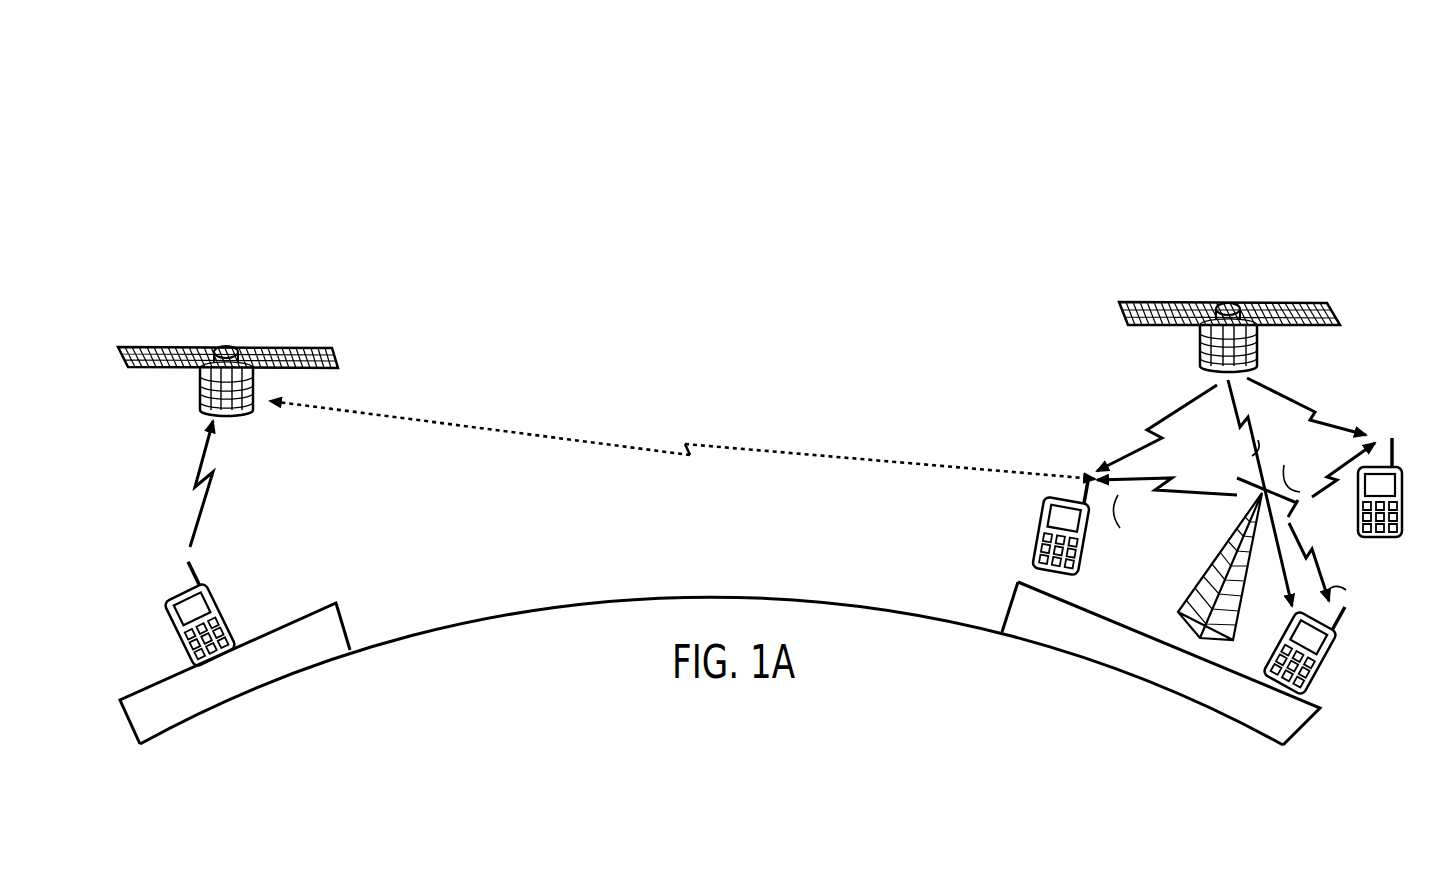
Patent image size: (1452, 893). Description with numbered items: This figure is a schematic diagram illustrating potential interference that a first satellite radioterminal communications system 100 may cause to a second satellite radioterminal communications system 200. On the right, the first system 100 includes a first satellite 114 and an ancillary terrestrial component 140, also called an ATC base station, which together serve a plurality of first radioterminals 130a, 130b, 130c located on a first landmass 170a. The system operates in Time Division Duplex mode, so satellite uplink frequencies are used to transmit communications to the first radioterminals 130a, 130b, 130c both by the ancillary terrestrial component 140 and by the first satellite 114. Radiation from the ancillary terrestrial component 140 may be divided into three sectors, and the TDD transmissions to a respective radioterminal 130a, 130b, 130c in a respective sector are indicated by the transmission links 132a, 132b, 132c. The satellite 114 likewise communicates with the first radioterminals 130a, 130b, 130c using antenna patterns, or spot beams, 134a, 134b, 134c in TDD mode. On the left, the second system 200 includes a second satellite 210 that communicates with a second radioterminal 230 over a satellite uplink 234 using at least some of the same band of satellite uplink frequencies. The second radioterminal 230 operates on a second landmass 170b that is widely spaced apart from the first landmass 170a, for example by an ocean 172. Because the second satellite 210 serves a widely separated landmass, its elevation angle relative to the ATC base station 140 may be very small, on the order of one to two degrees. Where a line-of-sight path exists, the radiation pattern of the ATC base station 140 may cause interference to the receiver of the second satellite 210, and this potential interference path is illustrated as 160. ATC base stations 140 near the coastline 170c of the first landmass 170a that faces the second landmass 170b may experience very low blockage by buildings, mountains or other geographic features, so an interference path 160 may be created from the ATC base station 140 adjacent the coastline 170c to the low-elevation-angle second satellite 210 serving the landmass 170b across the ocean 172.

The first satellite radioterminal communications system 100 is at (1090, 353).
The first satellite 114 is at (1254, 300).
The first radioterminal 130a is at (1040, 530).
The first radioterminal 130b is at (1318, 668).
The first radioterminal 130c is at (1378, 537).
The transmission link 132a is at (1167, 522).
The transmission link 132b is at (1313, 550).
The transmission link 132c is at (1312, 495).
The antenna pattern (spot beam) 134a is at (1180, 403).
The antenna pattern (spot beam) 134b is at (1233, 397).
The antenna pattern (spot beam) 134c is at (1280, 400).
The ancillary terrestrial component 140 is at (1218, 562).
The interference path 160 is at (640, 450).
The first landmass 170a is at (1182, 667).
The second landmass 170b is at (300, 666).
The coastline 170c is at (1010, 603).
The ocean 172 is at (711, 654).
The second satellite radioterminal communications system 200 is at (213, 303).
The second satellite 210 is at (255, 345).
The second radioterminal 230 is at (223, 600).
The satellite uplink 234 is at (203, 453).